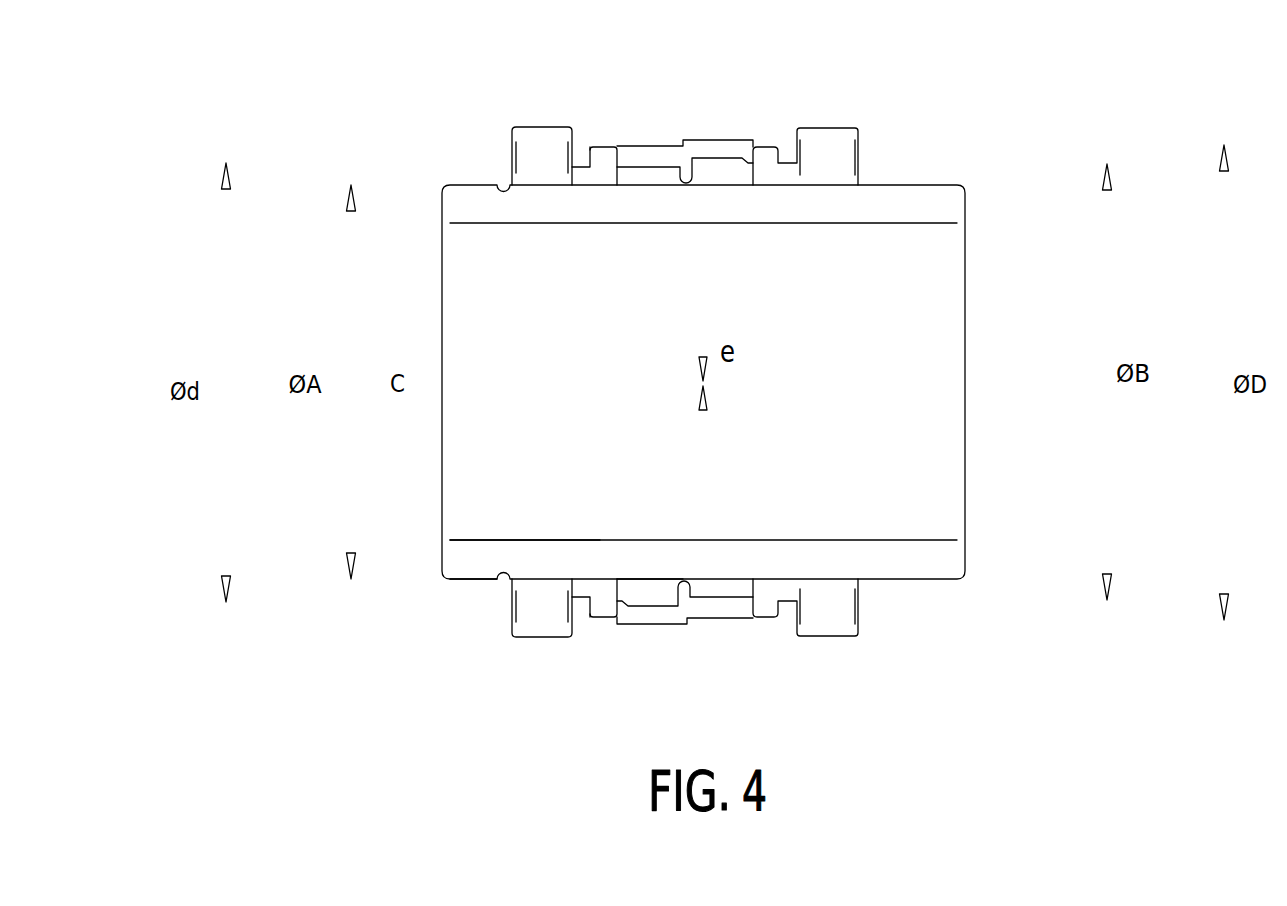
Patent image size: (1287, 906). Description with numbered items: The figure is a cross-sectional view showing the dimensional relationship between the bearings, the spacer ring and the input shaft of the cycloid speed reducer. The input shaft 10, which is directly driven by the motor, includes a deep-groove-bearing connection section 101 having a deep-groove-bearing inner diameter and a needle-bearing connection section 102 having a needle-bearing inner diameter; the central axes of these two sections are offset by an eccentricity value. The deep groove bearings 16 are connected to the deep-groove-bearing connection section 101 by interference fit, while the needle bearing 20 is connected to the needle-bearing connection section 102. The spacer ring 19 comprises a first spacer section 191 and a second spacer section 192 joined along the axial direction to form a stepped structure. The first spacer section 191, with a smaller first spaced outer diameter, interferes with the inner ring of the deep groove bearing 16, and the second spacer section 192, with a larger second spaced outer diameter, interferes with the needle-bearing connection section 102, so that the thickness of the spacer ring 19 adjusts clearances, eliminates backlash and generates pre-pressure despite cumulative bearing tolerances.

The input shaft 10 is at (906, 210).
The deep groove bearing 16 is at (547, 143).
The spacer ring 19 is at (606, 312).
The first spacer section 191 is at (581, 163).
The second spacer section 192 is at (628, 343).
The needle bearing 20 is at (634, 614).
The deep-groove-bearing connection section 101 is at (527, 557).
The needle-bearing connection section 102 is at (647, 593).